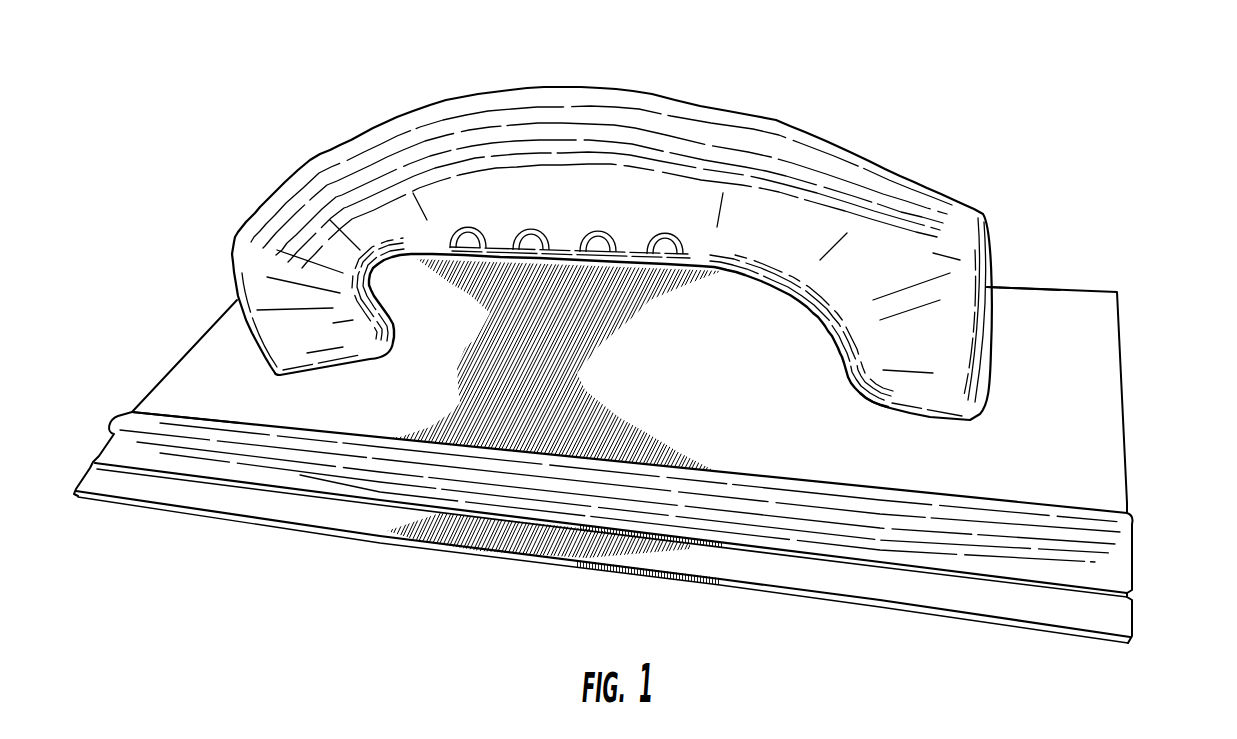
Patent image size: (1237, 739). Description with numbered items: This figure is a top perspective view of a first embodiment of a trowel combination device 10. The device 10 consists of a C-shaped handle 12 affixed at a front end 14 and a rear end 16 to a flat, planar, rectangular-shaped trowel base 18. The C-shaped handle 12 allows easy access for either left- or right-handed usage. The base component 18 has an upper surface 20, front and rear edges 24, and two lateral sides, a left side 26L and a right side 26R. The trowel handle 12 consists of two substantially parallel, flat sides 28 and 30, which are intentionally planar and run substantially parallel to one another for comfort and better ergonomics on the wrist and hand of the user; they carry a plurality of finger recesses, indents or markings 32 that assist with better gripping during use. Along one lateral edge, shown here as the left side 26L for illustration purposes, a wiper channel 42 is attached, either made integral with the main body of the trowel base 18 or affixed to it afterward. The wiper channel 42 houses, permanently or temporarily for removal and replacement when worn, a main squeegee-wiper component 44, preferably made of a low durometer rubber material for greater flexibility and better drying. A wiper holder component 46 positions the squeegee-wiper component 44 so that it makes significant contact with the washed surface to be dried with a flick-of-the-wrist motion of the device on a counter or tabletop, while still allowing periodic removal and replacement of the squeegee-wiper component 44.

The device 10 is at (140, 339).
The C-shaped handle 12 is at (890, 288).
The front end 14 is at (360, 364).
The rear end 16 is at (878, 410).
The trowel base 18 is at (712, 388).
The upper surface 20 is at (643, 448).
The front and rear edges 24 is at (204, 340).
The left lateral side 26L is at (187, 413).
The right lateral side 26R is at (1057, 292).
The flat side 28 is at (552, 215).
The flat side 30 is at (632, 243).
The finger recesses 32 is at (470, 232).
The wiper channel 42 is at (1103, 572).
The squeegee-wiper component 44 is at (1110, 622).
The wiper holder component 46 is at (1122, 517).